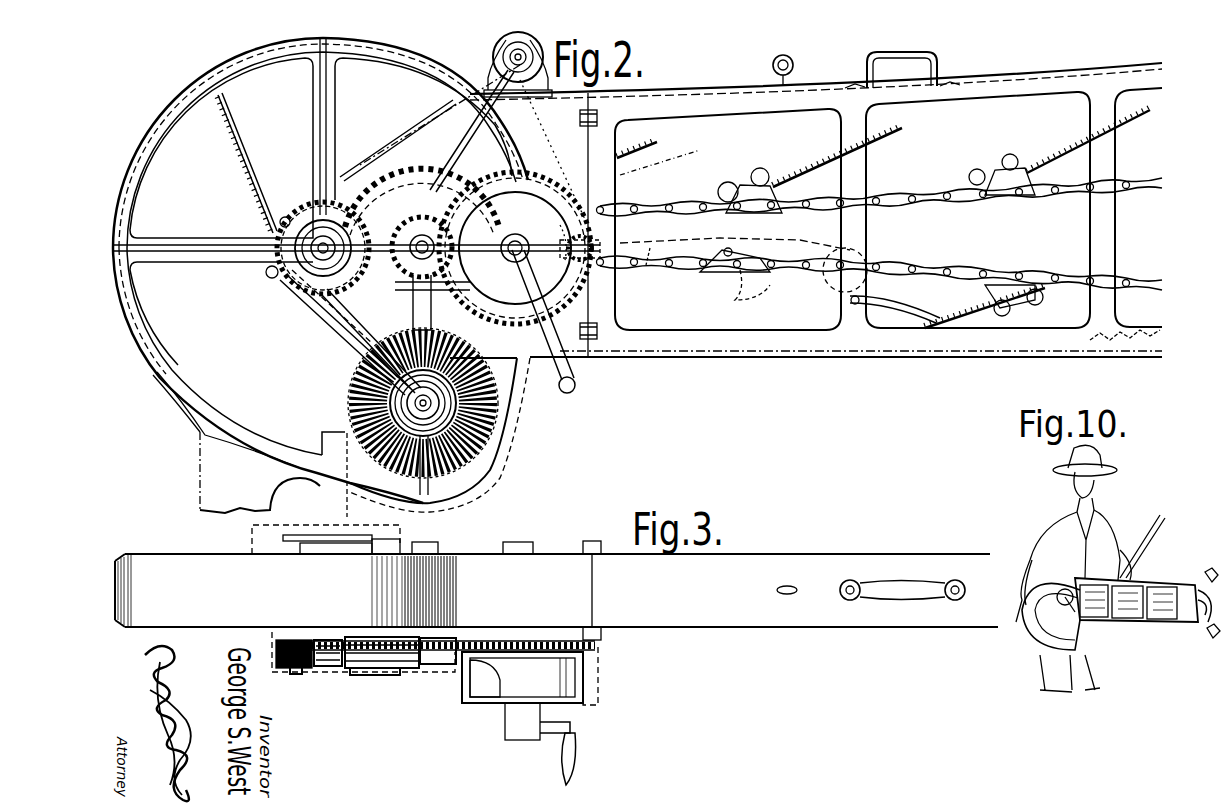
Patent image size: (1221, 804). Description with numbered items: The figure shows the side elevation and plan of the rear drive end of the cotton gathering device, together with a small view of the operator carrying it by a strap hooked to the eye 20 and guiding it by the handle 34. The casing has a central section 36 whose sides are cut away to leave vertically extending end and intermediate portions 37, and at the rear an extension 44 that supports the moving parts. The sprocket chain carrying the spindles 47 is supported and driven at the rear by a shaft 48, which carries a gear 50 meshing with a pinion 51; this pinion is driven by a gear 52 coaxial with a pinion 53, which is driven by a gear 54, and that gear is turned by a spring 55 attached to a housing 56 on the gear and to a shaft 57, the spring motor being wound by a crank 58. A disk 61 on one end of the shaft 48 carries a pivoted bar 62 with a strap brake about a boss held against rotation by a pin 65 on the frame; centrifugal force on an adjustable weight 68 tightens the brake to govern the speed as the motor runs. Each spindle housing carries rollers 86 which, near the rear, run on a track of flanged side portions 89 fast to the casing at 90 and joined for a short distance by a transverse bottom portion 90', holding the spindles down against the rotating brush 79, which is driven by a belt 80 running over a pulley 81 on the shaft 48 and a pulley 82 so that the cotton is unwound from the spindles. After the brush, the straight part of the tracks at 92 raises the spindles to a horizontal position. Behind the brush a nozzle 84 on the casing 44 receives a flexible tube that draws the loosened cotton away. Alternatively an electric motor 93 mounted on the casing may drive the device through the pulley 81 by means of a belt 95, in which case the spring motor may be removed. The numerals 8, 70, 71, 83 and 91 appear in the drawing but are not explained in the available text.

In FIG. 2, the extension 44 is at (190, 100).
In FIG. 3, the extension 44 is at (556, 615).
In FIG. 2, the sprocket 8 is at (604, 246).
In FIG. 2, the eye 20 is at (790, 62).
In FIG. 3, the eye 20 is at (787, 586).
In FIG. 2, the handle 34 is at (925, 55).
In FIG. 3, the handle 34 is at (905, 585).
In FIG. 2, the central section 36 is at (910, 350).
In FIG. 3, the central section 36 is at (855, 556).
In FIG. 2, the vertically extending end and intermediate portions 37 is at (612, 189).
In FIG. 2, the spindles 47 is at (905, 130).
In FIG. 2, the shaft 48 is at (300, 292).
In FIG. 2, the gear 50 is at (315, 300).
In FIG. 3, the gear 50 is at (295, 668).
In FIG. 2, the pinion 51 is at (340, 200).
In FIG. 3, the pinion 51 is at (330, 666).
In FIG. 2, the gear 52 is at (400, 205).
In FIG. 3, the gear 52 is at (385, 668).
In FIG. 2, the pinion 53 is at (428, 215).
In FIG. 3, the pinion 53 is at (430, 664).
In FIG. 2, the gear 54 is at (500, 178).
In FIG. 3, the gear 54 is at (598, 648).
In FIG. 3, the spring 55 is at (480, 690).
In FIG. 3, the housing 56 is at (560, 688).
In FIG. 2, the shaft 57 is at (520, 252).
In FIG. 3, the crank 58 is at (578, 735).
In FIG. 3, the disk 61 is at (316, 525).
In FIG. 3, the pivoted bar 62 is at (420, 542).
In FIG. 3, the pin 65 is at (320, 554).
In FIG. 3, the weight 68 is at (388, 539).
In FIG. 2, the link 70 is at (651, 247).
In FIG. 2, the chain 71 is at (756, 210).
In FIG. 2, the rotating brush 79 is at (460, 418).
In FIG. 2, the belt 80 is at (345, 320).
In FIG. 2, the pulley 81 is at (266, 272).
In FIG. 3, the pulley 81 is at (305, 675).
In FIG. 2, the pulley 82 is at (360, 402).
In FIG. 3, the pulley 82 is at (400, 676).
In FIG. 2, the bracket 83 is at (340, 430).
In FIG. 2, the nozzle 84 is at (207, 490).
In FIG. 2, the rollers 86 is at (760, 168).
In FIG. 2, the flanged side portions 89 is at (330, 318).
In FIG. 2, the casing attachment 90 is at (895, 282).
In FIG. 2, the transverse bottom portion 90' is at (561, 321).
In FIG. 2, the pulley 91 is at (506, 60).
In FIG. 2, the straight part of the tracks 92 is at (706, 285).
In FIG. 2, the electric motor 93 is at (494, 47).
In FIG. 2, the belt 95 is at (430, 135).